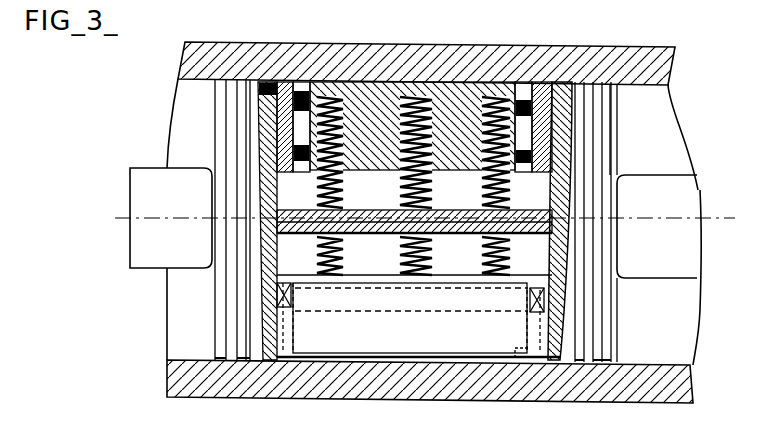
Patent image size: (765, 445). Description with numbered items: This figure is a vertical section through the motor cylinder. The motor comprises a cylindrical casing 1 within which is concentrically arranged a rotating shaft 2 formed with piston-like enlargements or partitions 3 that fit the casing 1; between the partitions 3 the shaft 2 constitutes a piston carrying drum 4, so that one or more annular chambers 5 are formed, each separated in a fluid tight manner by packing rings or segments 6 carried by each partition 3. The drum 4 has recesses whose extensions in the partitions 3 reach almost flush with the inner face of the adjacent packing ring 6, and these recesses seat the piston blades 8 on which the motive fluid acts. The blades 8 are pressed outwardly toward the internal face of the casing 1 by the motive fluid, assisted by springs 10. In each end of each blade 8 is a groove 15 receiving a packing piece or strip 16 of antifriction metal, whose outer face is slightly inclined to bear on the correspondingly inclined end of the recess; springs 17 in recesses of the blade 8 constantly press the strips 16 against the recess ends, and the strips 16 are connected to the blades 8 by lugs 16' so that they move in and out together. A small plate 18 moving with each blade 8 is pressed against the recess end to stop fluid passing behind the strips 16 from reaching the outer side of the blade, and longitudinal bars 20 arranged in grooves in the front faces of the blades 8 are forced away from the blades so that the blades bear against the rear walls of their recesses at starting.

The cylindrical casing 1 is at (432, 337).
The shaft 2 is at (147, 238).
The partition 3 is at (557, 167).
The piston carrying drum 4 is at (363, 213).
The annular chamber 5 is at (460, 382).
The packing ring 6 is at (266, 87).
The piston blade 8 is at (378, 96).
The spring 10 is at (432, 135).
The groove 15 is at (576, 123).
The packing strip 16 is at (428, 185).
The lug 16' is at (416, 91).
The spring 17 is at (280, 108).
The small plate 18 is at (282, 292).
The longitudinal bar 20 is at (418, 348).